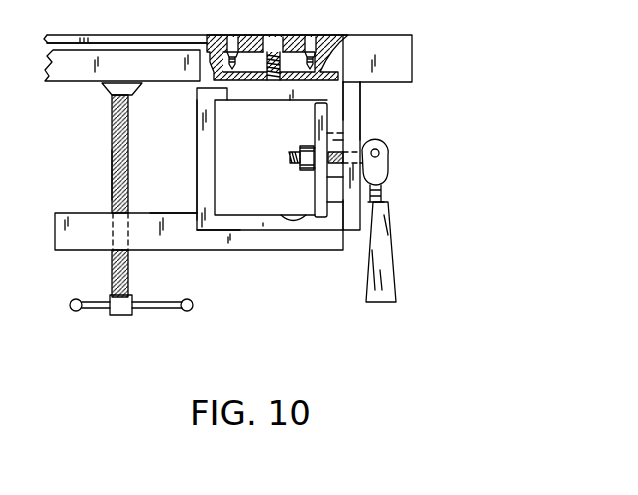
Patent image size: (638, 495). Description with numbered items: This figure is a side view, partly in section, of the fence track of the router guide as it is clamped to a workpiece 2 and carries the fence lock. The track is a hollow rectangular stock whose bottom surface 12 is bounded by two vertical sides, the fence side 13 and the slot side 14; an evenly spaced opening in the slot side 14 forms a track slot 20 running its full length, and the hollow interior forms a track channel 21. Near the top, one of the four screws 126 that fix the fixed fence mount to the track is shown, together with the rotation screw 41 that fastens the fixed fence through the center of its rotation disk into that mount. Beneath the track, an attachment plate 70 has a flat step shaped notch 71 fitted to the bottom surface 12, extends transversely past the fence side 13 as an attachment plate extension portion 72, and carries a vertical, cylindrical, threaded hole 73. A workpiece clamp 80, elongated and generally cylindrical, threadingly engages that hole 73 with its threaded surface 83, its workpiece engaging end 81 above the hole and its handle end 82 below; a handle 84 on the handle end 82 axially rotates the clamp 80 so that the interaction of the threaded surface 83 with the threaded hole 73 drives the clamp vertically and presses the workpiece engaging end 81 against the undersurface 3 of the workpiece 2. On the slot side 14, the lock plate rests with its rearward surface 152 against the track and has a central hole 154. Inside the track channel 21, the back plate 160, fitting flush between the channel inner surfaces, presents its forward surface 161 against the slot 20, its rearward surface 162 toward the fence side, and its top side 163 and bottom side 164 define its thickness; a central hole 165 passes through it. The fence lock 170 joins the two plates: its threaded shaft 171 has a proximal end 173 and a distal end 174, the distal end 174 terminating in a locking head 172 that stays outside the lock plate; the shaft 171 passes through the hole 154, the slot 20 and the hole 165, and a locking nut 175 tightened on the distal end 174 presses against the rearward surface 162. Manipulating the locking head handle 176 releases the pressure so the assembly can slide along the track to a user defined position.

The workpiece 2 is at (70, 70).
The undersurface 3 is at (156, 83).
The bottom surface 12 is at (251, 232).
The fence side 13 is at (197, 143).
The slot side 14 is at (346, 108).
The track slot 20 is at (348, 130).
The track channel 21 is at (238, 160).
The rotation screw 41 is at (272, 34).
The attachment plate 70 is at (174, 214).
The step shaped notch 71 is at (213, 232).
The attachment plate extension portion 72 is at (152, 232).
The threaded hole 73 is at (112, 232).
The workpiece clamp 80 is at (113, 133).
The workpiece engaging end 81 is at (105, 90).
The handle end 82 is at (130, 298).
The threaded surface 83 is at (113, 173).
The handle 84 is at (163, 312).
The screws 126 is at (234, 36).
The rearward surface 152 is at (342, 216).
The central hole 154 is at (348, 160).
The back plate 160 is at (383, 79).
The forward surface 161 is at (328, 191).
The rearward surface 162 is at (315, 115).
The top side 163 is at (326, 100).
The bottom side 164 is at (292, 218).
The central hole 165 is at (313, 173).
The fence lock 170 is at (449, 220).
The threaded shaft 171 is at (352, 143).
The locking head 172 is at (389, 162).
The proximal end 173 is at (386, 184).
The distal end 174 is at (290, 158).
The locking nut 175 is at (302, 146).
The locking head handle 176 is at (394, 284).